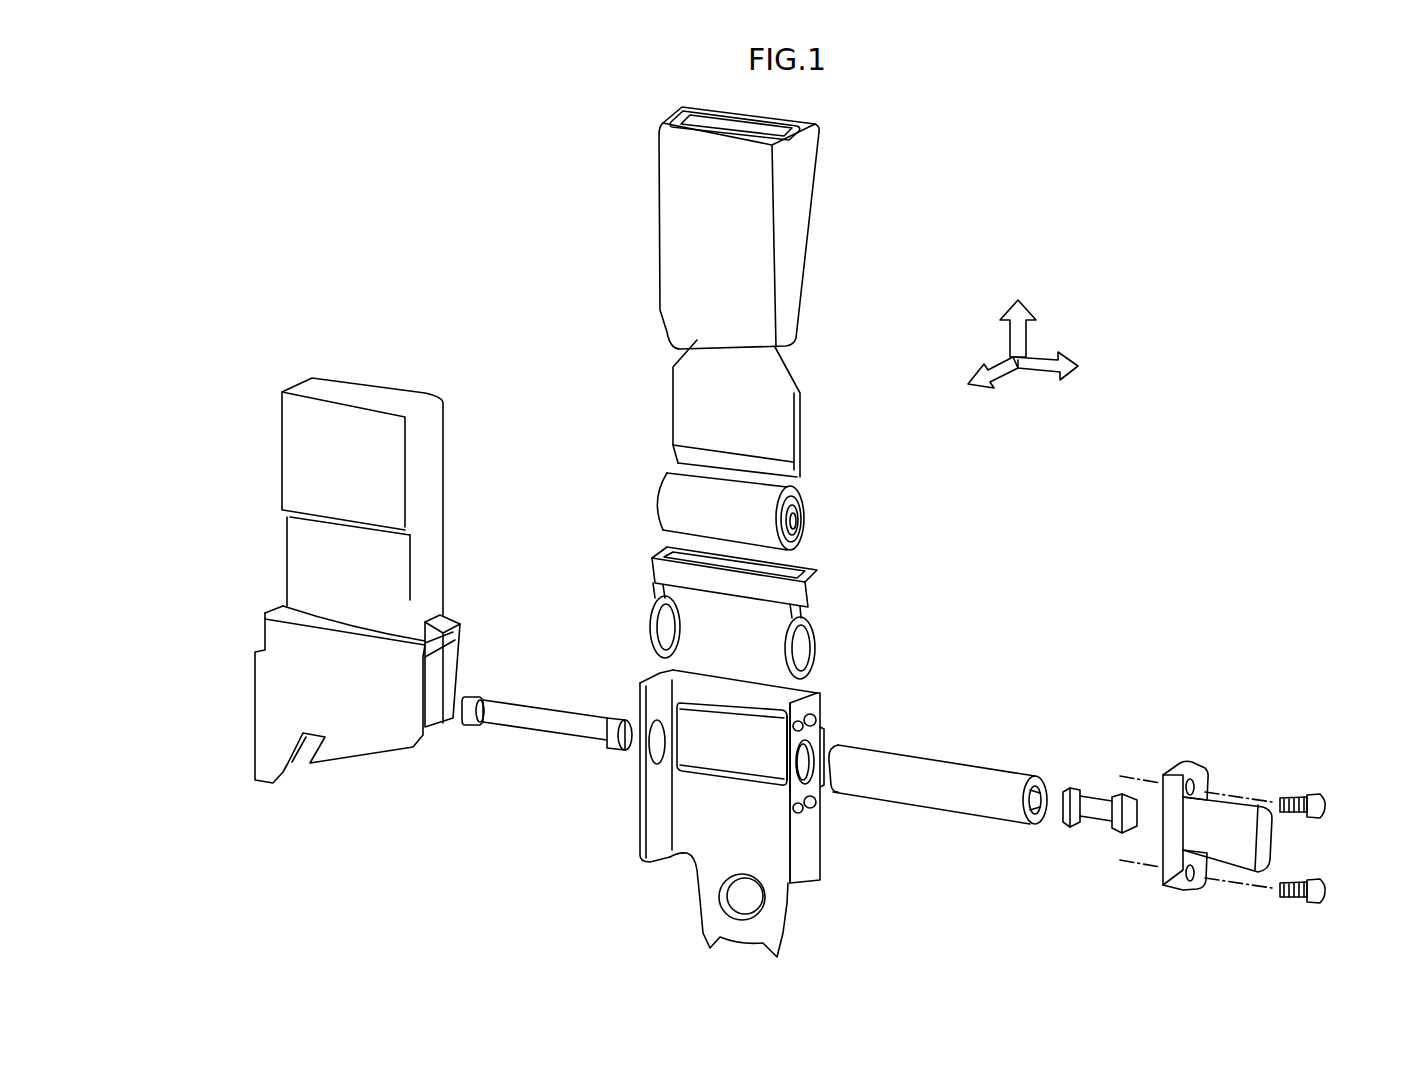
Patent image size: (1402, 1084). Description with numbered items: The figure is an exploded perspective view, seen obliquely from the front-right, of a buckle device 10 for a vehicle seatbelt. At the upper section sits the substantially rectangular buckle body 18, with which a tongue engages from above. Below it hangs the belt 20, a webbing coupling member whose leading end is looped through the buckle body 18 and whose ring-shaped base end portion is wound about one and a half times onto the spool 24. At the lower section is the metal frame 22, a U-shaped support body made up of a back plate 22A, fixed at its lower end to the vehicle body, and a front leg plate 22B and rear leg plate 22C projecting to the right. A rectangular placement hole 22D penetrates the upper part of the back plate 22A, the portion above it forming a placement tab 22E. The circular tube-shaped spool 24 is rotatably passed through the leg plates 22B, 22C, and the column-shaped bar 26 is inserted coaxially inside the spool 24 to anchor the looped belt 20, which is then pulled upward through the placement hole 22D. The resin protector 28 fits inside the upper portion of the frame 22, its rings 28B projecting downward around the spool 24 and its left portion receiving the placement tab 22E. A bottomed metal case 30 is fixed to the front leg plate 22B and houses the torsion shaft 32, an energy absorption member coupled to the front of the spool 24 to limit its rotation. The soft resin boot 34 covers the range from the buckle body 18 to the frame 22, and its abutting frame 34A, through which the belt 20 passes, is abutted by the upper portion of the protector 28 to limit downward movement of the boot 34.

The buckle device 10 is at (486, 236).
The buckle body 18 is at (657, 203).
The belt 20 is at (805, 412).
The frame 22 is at (731, 779).
The back plate 22A is at (707, 850).
The leg plate 22B is at (810, 843).
The leg plate 22C is at (645, 683).
The placement hole 22D is at (700, 703).
The placement tab 22E is at (745, 697).
The spool 24 is at (958, 762).
The bar 26 is at (528, 728).
The protector 28 is at (651, 556).
The rings 28B is at (655, 617).
The case 30 is at (1273, 838).
The torsion shaft 32 is at (1103, 790).
The boot 34 is at (283, 447).
The abutting frame 34A is at (443, 622).